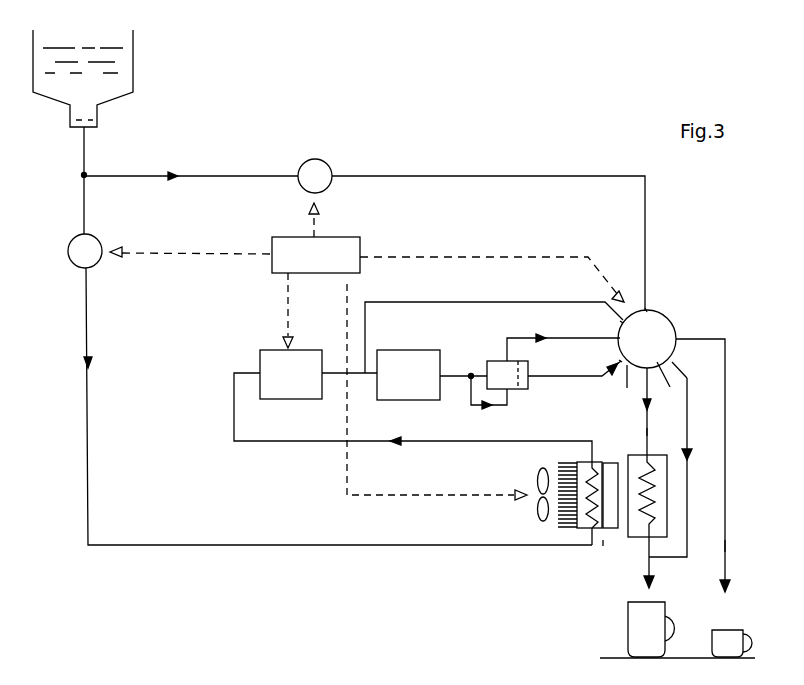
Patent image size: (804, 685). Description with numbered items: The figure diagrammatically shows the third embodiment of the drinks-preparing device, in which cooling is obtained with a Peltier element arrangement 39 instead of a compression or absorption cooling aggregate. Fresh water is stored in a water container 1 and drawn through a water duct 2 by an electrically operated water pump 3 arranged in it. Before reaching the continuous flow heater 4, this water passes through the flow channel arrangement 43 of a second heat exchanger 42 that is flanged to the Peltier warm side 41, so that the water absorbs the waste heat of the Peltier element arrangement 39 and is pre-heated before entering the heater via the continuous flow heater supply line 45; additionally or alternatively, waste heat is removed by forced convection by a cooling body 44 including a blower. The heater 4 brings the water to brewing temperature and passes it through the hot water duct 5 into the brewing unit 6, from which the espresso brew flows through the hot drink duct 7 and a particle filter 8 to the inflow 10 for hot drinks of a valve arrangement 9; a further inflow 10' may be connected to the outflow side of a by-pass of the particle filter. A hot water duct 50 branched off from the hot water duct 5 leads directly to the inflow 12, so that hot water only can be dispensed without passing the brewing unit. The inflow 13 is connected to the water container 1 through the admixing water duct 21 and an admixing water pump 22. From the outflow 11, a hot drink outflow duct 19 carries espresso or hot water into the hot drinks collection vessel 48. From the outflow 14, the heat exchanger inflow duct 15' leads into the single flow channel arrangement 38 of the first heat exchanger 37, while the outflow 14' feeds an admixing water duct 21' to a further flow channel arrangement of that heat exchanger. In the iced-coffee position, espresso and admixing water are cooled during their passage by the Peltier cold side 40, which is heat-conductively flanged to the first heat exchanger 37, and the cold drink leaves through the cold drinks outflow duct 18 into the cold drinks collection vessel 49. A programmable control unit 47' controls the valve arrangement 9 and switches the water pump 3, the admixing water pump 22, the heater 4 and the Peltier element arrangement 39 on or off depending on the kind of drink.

The water container 1 is at (107, 72).
The water duct 2 is at (82, 210).
The water pump 3 is at (88, 250).
The continuous flow heater 4 is at (275, 370).
The hot water duct 5 is at (342, 371).
The brewing unit 6 is at (390, 362).
The hot drink duct 7 is at (457, 378).
The particle filter 8 is at (500, 372).
The valve arrangement 9 is at (652, 332).
The inflow for hot drink 10 is at (622, 388).
The further inflow 10' is at (599, 357).
The outflow 11 is at (678, 338).
The further inflow 12 is at (616, 321).
The further inflow 13 is at (650, 308).
The further outflow 14 is at (669, 386).
The further outflow 14' is at (696, 362).
The heat exchanger inflow duct 15' is at (666, 428).
The cold drinks outflow duct 18 is at (653, 573).
The hot drink outflow duct 19 is at (725, 547).
The admixing water duct 21 is at (364, 221).
The feed line 21' is at (706, 467).
The admixing water pump 22 is at (318, 172).
The first heat exchanger 37 is at (671, 497).
The flow channel arrangement 38 is at (655, 520).
The Peltier element arrangement 39 is at (601, 548).
The Peltier cold side 40 is at (632, 411).
The Peltier warm side 41 is at (610, 520).
The second heat exchanger 42 is at (581, 532).
The flow channel arrangement 43 is at (591, 481).
The cooling body 44 is at (558, 521).
The continuous flow heater supply line 45 is at (298, 442).
The control unit 47' is at (367, 351).
The hot drinks collection vessel 48 is at (728, 642).
The cold drinks collection vessel 49 is at (648, 633).
The hot water duct 50 is at (433, 302).